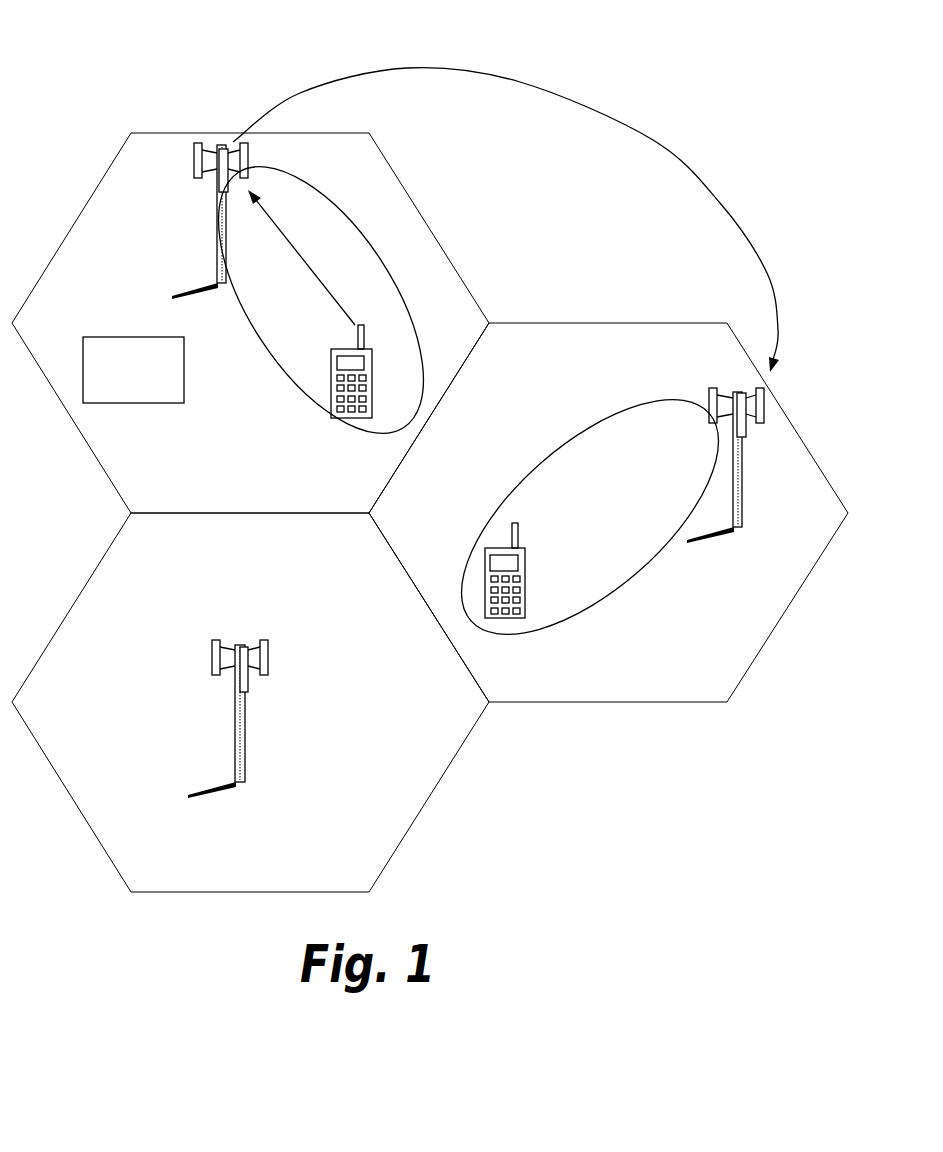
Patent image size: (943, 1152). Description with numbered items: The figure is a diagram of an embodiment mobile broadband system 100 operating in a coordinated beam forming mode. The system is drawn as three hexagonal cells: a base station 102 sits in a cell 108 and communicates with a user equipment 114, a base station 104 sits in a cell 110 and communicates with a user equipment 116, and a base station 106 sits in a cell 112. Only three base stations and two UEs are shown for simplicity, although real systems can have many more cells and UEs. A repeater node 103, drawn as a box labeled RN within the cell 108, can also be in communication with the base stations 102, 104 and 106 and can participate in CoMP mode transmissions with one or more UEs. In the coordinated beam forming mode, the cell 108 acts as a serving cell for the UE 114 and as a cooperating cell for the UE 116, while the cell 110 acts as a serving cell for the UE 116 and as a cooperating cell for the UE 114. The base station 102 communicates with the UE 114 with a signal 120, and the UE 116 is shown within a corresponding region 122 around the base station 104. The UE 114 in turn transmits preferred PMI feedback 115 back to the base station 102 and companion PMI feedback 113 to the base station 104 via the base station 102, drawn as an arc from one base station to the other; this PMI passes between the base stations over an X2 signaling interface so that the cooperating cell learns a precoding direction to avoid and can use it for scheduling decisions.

The mobile broadband system 100 is at (147, 44).
The base station 102 is at (212, 251).
The repeater node 103 is at (158, 337).
The base station 104 is at (743, 507).
The base station 106 is at (246, 748).
The cell 108 is at (167, 166).
The cell 110 is at (535, 354).
The cell 112 is at (172, 548).
The companion PMI feedback 113 is at (566, 97).
The user equipment 114 is at (331, 398).
The preferred PMI feedback 115 is at (311, 273).
The user equipment 116 is at (527, 605).
The signal 120 is at (335, 208).
The coverage area 122 is at (573, 440).